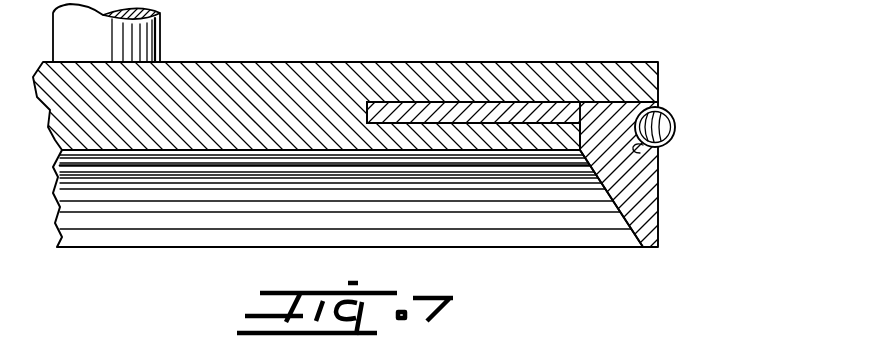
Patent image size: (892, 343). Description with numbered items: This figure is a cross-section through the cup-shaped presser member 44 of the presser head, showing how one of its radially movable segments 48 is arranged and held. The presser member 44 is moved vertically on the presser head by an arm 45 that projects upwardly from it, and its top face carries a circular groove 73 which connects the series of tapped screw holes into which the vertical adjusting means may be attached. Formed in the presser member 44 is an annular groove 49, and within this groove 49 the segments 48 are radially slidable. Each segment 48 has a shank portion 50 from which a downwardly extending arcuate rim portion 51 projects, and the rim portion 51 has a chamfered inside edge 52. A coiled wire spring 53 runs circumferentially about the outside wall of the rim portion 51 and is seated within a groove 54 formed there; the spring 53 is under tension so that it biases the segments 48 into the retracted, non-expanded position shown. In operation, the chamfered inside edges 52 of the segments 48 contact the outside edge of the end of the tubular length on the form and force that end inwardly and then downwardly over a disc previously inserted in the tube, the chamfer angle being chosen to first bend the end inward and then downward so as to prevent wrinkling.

The presser member 44 is at (333, 77).
The arm 45 is at (157, 33).
The segment 48 is at (660, 200).
The annular groove 49 is at (414, 106).
The shank portion 50 is at (507, 110).
The arcuate rim portion 51 is at (660, 181).
The chamfered inside edge 52 is at (597, 217).
The coiled wire spring 53 is at (677, 127).
The groove 54 is at (660, 152).
The circular groove 73 is at (482, 67).